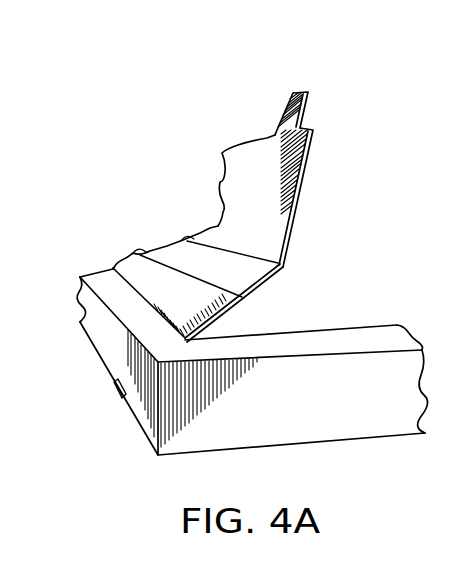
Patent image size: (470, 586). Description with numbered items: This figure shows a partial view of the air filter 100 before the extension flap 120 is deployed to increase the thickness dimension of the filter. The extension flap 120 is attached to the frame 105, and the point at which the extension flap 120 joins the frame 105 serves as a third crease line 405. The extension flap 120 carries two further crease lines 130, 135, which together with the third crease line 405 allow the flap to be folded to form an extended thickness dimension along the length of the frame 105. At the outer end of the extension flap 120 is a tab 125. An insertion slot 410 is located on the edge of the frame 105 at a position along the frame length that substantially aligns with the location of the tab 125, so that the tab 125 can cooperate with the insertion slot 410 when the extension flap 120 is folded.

The air filter 100 is at (129, 71).
The frame 105 is at (133, 419).
The extension flap 120 is at (302, 189).
The tab 125 is at (288, 114).
The crease line 130 is at (143, 249).
The crease line 135 is at (187, 238).
The third crease line 405 is at (110, 270).
The insertion slot 410 is at (116, 392).